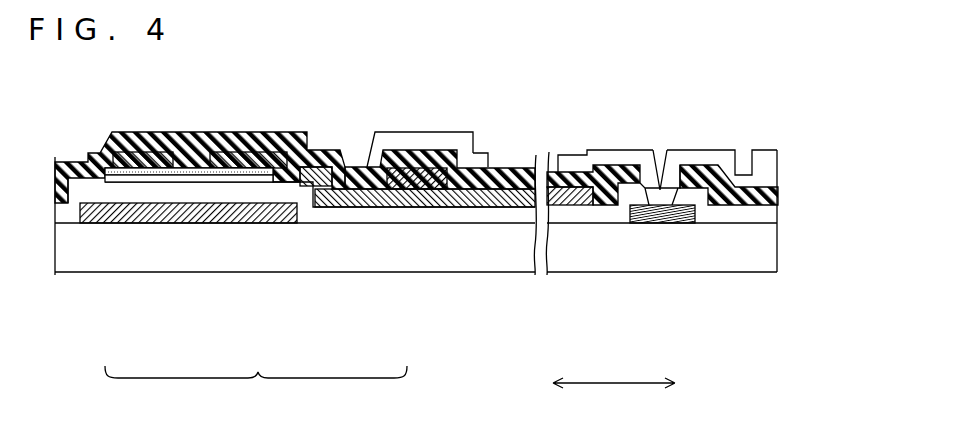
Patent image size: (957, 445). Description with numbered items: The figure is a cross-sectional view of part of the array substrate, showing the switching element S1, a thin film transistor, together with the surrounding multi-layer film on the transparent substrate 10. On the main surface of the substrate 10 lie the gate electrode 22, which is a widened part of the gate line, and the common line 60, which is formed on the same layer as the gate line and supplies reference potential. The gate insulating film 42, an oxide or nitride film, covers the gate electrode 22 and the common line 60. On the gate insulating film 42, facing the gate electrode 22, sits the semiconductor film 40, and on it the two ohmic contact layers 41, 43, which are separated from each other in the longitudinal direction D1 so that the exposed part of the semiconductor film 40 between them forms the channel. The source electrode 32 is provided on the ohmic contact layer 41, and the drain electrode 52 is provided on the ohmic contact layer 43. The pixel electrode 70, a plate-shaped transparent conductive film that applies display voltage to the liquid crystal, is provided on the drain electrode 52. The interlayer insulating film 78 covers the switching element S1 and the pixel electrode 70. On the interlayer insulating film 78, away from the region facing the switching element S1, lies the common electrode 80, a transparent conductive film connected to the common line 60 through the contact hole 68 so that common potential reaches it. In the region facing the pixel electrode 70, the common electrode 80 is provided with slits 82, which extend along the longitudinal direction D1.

The transparent substrate 10 is at (510, 258).
The gate electrode 22 is at (128, 207).
The ohmic contact layer 41 is at (148, 180).
The source electrode 32 is at (163, 168).
The semiconductor film 40 is at (233, 176).
The ohmic contact layer 43 is at (258, 166).
The interlayer insulating film 78 is at (250, 132).
The pixel electrode 70 is at (468, 190).
The drain electrode 52 is at (358, 205).
The gate insulating film 42 is at (393, 208).
The common electrode 80 is at (440, 138).
The slit 82 is at (488, 167).
The contact hole 68 is at (658, 162).
The common line 60 is at (662, 226).
The switching element S1 is at (256, 393).
The longitudinal direction D1 is at (614, 364).